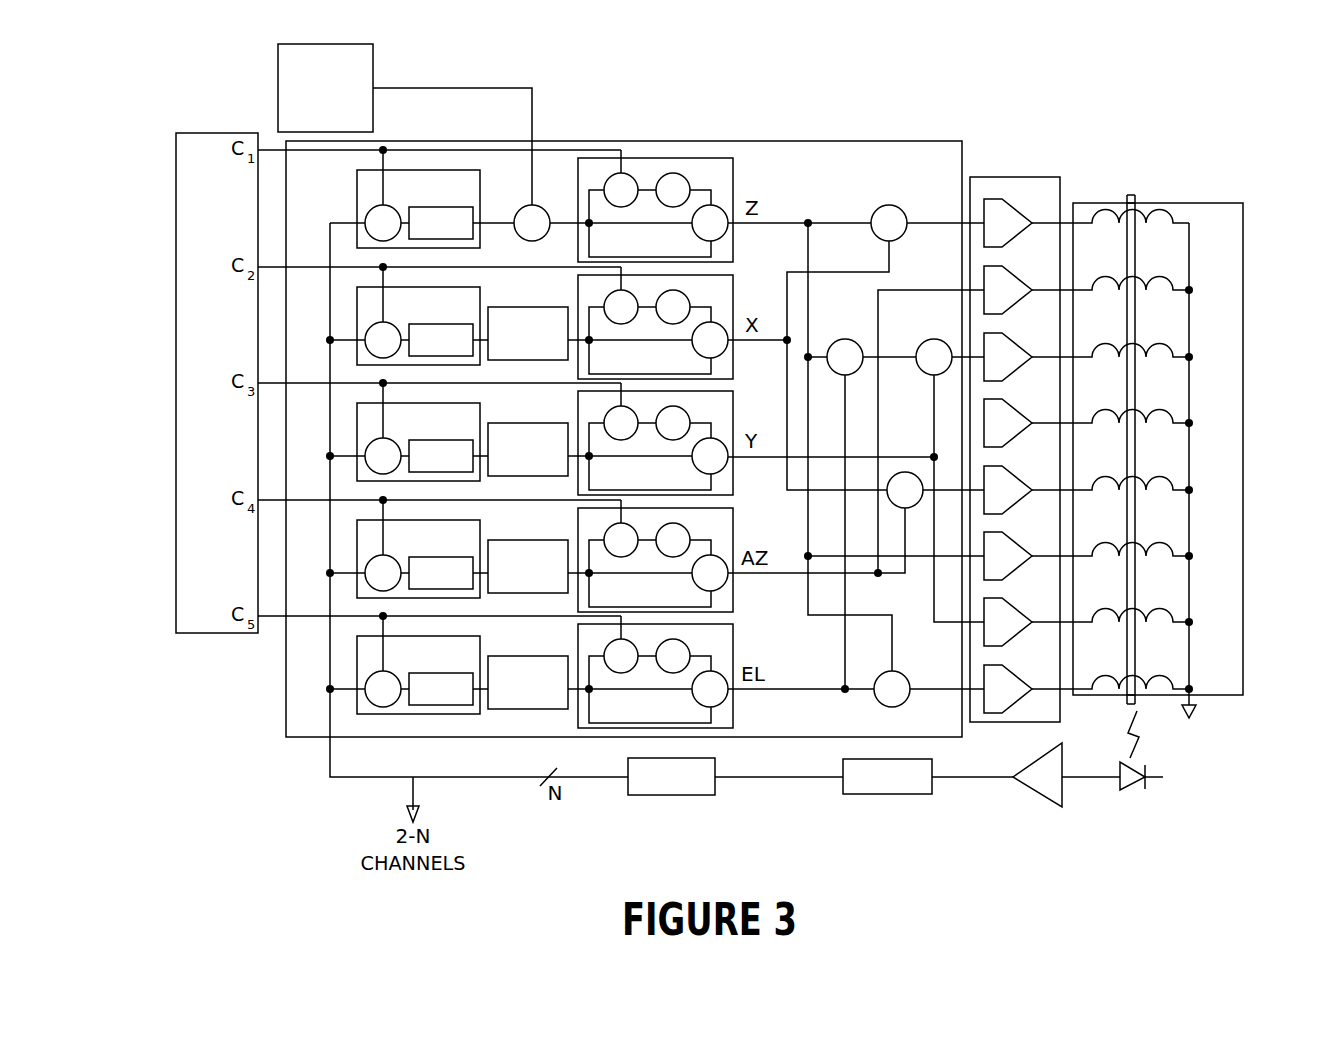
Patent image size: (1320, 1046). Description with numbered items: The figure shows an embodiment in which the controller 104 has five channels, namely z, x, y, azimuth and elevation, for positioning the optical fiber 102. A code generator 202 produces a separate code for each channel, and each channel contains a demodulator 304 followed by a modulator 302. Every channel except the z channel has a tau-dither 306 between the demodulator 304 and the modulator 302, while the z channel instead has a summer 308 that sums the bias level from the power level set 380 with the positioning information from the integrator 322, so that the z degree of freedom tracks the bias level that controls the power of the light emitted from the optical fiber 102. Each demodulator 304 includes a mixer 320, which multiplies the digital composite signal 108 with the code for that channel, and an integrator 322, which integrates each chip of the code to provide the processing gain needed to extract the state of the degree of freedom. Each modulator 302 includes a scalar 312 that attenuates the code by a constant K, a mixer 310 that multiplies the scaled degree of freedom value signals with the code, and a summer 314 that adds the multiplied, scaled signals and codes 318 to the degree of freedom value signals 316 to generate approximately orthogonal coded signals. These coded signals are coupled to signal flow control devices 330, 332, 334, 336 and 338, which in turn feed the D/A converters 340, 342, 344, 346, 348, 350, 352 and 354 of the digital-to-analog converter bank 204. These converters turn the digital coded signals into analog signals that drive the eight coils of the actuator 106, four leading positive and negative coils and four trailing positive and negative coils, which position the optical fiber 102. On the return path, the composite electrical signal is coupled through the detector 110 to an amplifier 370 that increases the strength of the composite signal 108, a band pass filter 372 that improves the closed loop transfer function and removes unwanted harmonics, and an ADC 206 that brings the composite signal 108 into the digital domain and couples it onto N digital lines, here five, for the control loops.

The optical fiber 102 is at (1136, 198).
The controller 104 is at (962, 145).
The actuator 106 is at (1243, 206).
The composite signal 108 is at (1140, 743).
The receiver detector 110 is at (1119, 788).
The code generator 202 is at (215, 633).
The digital-to-analog converter 204 is at (1060, 180).
The ADC 206 is at (715, 790).
The modulator 302 is at (733, 162).
The demodulator 304 is at (357, 190).
The tau-dither 306 is at (517, 307).
The summer 308 is at (522, 205).
The mixer 310 is at (621, 207).
The scalar 312 is at (673, 207).
The summer 314 is at (697, 231).
The degree of freedom value signals 316 is at (578, 258).
The multiplied, scaled degree of freedom value signals and codes 318 is at (716, 182).
The mixer 320 is at (399, 205).
The integrator 322 is at (445, 207).
The signal flow control device 330 is at (899, 211).
The signal flow control device 332 is at (842, 339).
The signal flow control device 334 is at (931, 339).
The signal flow control device 336 is at (900, 472).
The signal flow control device 338 is at (898, 672).
The D/A converter 340 is at (1032, 213).
The D/A converter 342 is at (1032, 280).
The D/A converter 344 is at (1032, 347).
The D/A converter 346 is at (1032, 413).
The D/A converter 348 is at (1032, 480).
The D/A converter 350 is at (1032, 546).
The D/A converter 352 is at (1032, 612).
The D/A converter 354 is at (1032, 679).
The amplifier 370 is at (1047, 802).
The band pass filter 372 is at (932, 790).
The power level set 380 is at (373, 58).